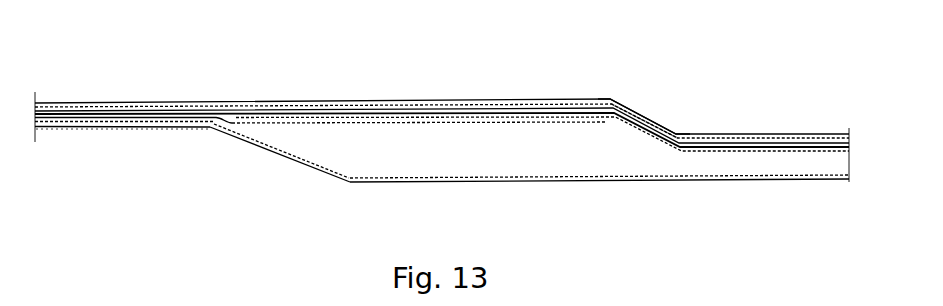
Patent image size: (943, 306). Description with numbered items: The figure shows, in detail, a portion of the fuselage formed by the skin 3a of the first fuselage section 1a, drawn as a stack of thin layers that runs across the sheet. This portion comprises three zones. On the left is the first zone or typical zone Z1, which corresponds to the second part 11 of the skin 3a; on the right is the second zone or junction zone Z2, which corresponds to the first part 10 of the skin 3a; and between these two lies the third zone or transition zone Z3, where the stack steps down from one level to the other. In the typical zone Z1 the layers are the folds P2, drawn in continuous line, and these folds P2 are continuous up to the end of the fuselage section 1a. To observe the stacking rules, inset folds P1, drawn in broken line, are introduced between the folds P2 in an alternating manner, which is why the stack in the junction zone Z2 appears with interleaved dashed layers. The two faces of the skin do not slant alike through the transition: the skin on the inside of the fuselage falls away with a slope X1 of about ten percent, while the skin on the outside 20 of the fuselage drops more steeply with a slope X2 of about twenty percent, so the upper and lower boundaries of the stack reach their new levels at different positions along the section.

The second part 11 is at (79, 77).
The skin 3a is at (113, 103).
The outside of the fuselage 20 is at (205, 75).
The folds P2 is at (230, 117).
The first part 10 is at (306, 87).
The inset folds P1 is at (592, 108).
The slope X2 is at (650, 123).
The first fuselage section 1a is at (80, 160).
The typical zone Z1 is at (135, 150).
The slope X1 is at (277, 153).
The transition zone Z3 is at (597, 206).
The junction zone Z2 is at (752, 205).